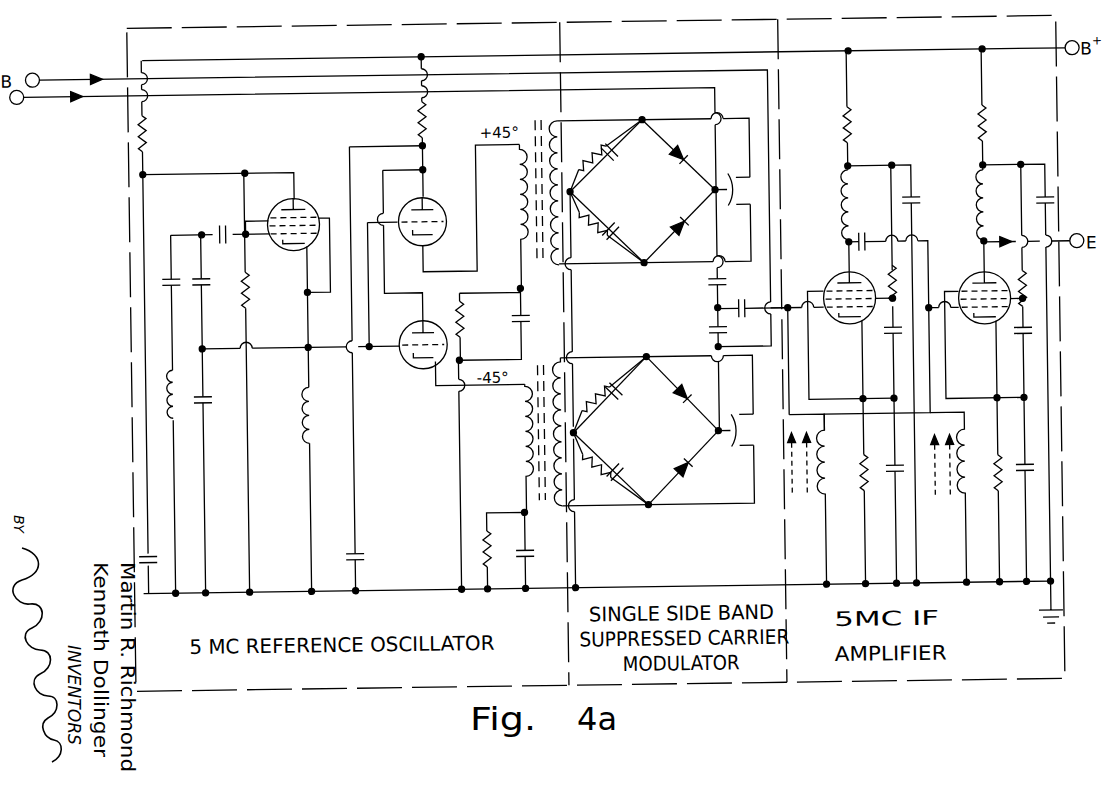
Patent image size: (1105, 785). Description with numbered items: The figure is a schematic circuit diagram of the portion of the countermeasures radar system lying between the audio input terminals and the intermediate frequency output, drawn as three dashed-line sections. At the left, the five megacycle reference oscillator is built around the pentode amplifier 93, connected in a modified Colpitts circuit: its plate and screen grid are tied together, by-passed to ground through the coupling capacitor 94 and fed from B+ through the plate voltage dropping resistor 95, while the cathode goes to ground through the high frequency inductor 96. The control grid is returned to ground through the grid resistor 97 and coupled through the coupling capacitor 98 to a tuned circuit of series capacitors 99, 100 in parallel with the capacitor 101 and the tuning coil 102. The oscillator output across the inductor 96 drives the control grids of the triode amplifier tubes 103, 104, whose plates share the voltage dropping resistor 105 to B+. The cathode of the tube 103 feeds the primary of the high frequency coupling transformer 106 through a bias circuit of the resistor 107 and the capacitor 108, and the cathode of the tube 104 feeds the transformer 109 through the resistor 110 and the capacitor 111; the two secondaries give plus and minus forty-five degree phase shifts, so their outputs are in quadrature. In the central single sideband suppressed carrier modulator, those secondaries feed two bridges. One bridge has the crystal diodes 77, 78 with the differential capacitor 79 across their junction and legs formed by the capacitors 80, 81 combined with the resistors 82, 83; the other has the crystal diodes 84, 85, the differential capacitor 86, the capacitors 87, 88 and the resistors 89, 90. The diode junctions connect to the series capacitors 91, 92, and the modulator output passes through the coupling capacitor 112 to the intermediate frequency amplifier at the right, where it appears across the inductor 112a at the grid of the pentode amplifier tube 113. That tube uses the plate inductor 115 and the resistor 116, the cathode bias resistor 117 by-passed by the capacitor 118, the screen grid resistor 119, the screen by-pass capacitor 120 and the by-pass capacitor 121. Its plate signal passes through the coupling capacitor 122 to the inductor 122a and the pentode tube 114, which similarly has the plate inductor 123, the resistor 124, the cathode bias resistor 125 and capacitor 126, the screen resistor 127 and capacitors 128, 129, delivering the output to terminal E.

The crystal diode 77 is at (680, 151).
The crystal diode 78 is at (684, 237).
The differential capacitor 79 is at (742, 193).
The capacitor 80 is at (619, 167).
The capacitor 81 is at (619, 223).
The resistor 82 is at (594, 149).
The resistor 83 is at (596, 233).
The crystal diode 84 is at (693, 389).
The crystal diode 85 is at (693, 457).
The differential capacitor 86 is at (745, 434).
The capacitor 87 is at (624, 397).
The capacitor 88 is at (626, 454).
The resistor 89 is at (604, 389).
The resistor 90 is at (604, 475).
The capacitor 91 is at (710, 284).
The capacitor 92 is at (710, 332).
The pentode amplifier 93 is at (317, 204).
The coupling capacitor 94 is at (150, 560).
The plate voltage dropping resistor 95 is at (149, 133).
The high frequency inductor 96 is at (302, 402).
The grid resistor 97 is at (251, 282).
The coupling capacitor 98 is at (223, 225).
The capacitor 99 is at (208, 276).
The capacitor 100 is at (207, 397).
The capacitor 101 is at (168, 275).
The tuning coil 102 is at (176, 396).
The triode amplifier tube 103 is at (441, 205).
The triode amplifier tube 104 is at (406, 331).
The voltage dropping resistor 105 is at (419, 128).
The high frequency coupling transformer 106 is at (520, 193).
The resistor 107 is at (457, 320).
The capacitor 108 is at (511, 318).
The high frequency coupling transformer 109 is at (516, 446).
The resistor 110 is at (484, 540).
The capacitor 111 is at (531, 553).
The coupling capacitor 112 is at (744, 305).
The high frequency inductor 112a is at (814, 500).
The pentode amplifier tube 113 is at (832, 288).
The pentode amplifier tube 114 is at (968, 290).
The high frequency inductor 115 is at (838, 206).
The voltage dropping resistor 116 is at (854, 128).
The cathode bias resistor 117 is at (858, 477).
The capacitor 118 is at (891, 476).
The voltage dropping resistor 119 is at (888, 284).
The capacitor 120 is at (888, 338).
The by-pass capacitor 121 is at (918, 204).
The coupling capacitor 122 is at (865, 240).
The high frequency inductor 122a is at (956, 502).
The plate high frequency inductor 123 is at (973, 206).
The plate voltage dropping resistor 124 is at (989, 128).
The cathode bias resistor 125 is at (994, 478).
The by-pass capacitor 126 is at (1018, 480).
The screen grid dropping resistor 127 is at (1019, 277).
The by-pass capacitor 128 is at (1018, 339).
The by-pass capacitor 129 is at (1056, 204).